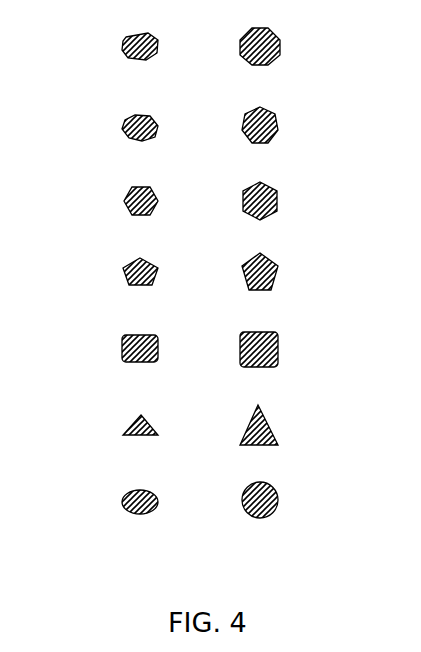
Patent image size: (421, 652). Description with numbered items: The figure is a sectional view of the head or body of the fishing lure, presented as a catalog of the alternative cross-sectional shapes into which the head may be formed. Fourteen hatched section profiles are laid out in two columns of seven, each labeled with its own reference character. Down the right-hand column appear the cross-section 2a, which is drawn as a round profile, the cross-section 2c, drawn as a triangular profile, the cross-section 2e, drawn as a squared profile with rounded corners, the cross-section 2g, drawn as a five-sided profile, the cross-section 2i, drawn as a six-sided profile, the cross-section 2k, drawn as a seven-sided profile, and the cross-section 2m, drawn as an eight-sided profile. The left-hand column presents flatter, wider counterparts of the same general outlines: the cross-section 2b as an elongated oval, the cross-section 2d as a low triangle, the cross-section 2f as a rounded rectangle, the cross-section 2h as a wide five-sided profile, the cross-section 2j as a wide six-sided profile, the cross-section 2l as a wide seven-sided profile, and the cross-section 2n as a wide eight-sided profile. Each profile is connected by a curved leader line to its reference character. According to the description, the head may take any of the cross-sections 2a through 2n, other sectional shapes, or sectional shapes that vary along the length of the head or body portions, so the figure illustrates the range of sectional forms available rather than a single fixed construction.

The cross-section 2a is at (278, 493).
The cross-section 2b is at (124, 496).
The cross-section 2c is at (267, 421).
The cross-section 2d is at (130, 425).
The cross-section 2e is at (278, 345).
The cross-section 2f is at (122, 347).
The cross-section 2g is at (277, 267).
The cross-section 2h is at (123, 270).
The cross-section 2i is at (277, 197).
The cross-section 2j is at (124, 198).
The cross-section 2k is at (277, 123).
The cross-section 2l is at (122, 125).
The cross-section 2m is at (278, 43).
The cross-section 2n is at (122, 45).